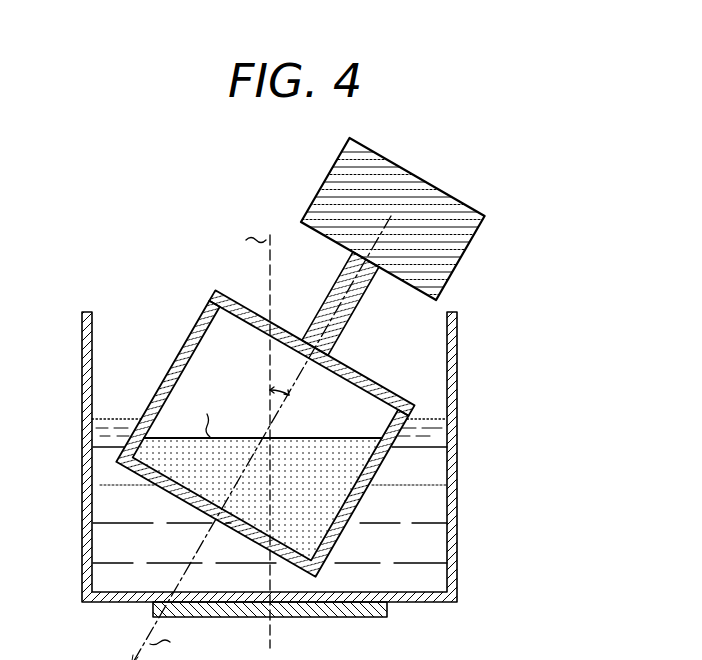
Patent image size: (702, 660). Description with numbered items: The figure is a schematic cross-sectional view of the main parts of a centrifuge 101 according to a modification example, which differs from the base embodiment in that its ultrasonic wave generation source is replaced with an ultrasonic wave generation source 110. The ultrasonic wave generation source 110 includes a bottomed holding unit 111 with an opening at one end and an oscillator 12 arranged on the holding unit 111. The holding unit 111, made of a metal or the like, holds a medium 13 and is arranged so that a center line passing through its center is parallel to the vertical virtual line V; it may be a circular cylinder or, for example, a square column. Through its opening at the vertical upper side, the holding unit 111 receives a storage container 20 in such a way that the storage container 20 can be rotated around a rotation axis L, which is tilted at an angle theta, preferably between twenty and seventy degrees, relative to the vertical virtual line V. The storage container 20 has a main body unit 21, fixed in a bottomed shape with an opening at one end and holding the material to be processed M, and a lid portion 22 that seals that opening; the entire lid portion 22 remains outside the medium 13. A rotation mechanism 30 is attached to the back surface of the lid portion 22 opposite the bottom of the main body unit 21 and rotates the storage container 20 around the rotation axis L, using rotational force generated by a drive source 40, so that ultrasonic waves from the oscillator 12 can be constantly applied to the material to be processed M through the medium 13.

The oscillator 12 is at (385, 607).
The medium 13 is at (440, 547).
The storage container 20 is at (265, 433).
The main body unit 21 is at (262, 439).
The lid portion 22 is at (311, 352).
The rotation mechanism 30 is at (340, 303).
The drive source 40 is at (393, 219).
The centrifuge 101 is at (325, 389).
The ultrasonic wave generation source 110 is at (325, 475).
The holding unit 111 is at (457, 581).